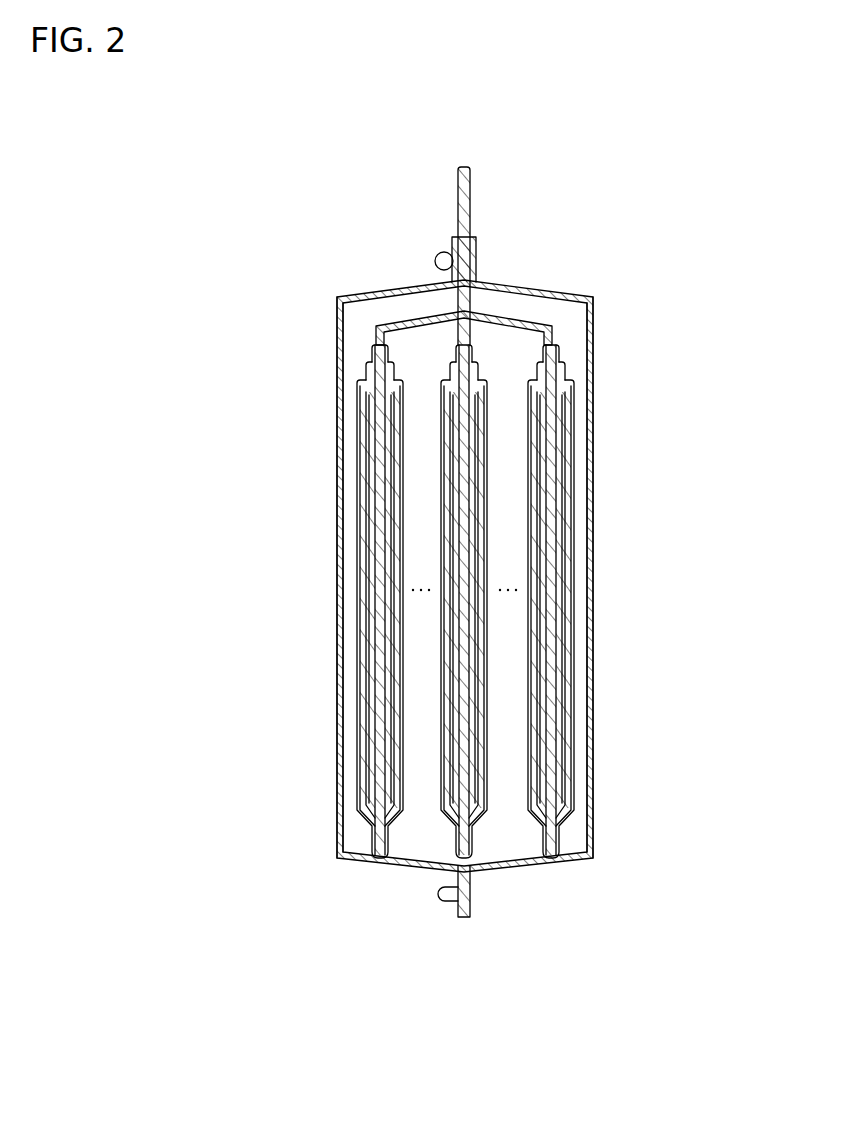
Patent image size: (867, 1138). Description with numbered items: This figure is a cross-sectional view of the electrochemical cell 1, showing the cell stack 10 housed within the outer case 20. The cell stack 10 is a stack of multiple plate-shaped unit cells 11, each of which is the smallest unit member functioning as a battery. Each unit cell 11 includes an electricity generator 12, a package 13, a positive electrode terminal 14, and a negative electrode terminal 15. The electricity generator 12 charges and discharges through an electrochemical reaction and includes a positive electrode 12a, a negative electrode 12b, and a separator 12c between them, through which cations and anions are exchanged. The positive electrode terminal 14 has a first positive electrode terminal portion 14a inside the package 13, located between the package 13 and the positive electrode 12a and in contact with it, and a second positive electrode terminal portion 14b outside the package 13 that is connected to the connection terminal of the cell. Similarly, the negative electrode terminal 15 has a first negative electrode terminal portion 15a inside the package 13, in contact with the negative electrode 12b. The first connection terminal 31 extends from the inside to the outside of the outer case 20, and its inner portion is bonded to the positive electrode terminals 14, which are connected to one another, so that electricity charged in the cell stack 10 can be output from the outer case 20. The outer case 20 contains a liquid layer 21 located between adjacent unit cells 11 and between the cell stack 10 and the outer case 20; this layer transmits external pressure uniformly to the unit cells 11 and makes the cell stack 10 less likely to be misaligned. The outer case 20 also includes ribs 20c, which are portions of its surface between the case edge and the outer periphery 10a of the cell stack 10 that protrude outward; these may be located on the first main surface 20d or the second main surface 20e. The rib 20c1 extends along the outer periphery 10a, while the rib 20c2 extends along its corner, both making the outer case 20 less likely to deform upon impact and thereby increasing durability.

The electrochemical cell 1 is at (460, 575).
The cell stack 10 is at (473, 690).
The outer periphery 10a is at (337, 860).
The unit cell 11 is at (473, 671).
The electricity generator 12 is at (470, 600).
The positive electrode 12a is at (362, 418).
The negative electrode 12b is at (367, 455).
The separator 12c is at (366, 434).
The package 13 is at (370, 625).
The positive electrode terminal 14 is at (473, 605).
The first positive electrode terminal portion 14a is at (358, 653).
The second positive electrode terminal portion 14b is at (378, 326).
The negative electrode terminal 15 is at (473, 619).
The first negative electrode terminal portion 15a is at (363, 717).
The outer case 20 is at (460, 571).
The rib 20c is at (424, 571).
The rib 20c1 is at (441, 895).
The rib 20c2 is at (436, 256).
The first main surface 20d is at (340, 577).
The second main surface 20e is at (590, 577).
The liquid layer 21 is at (567, 330).
The first connection terminal 31 is at (473, 195).